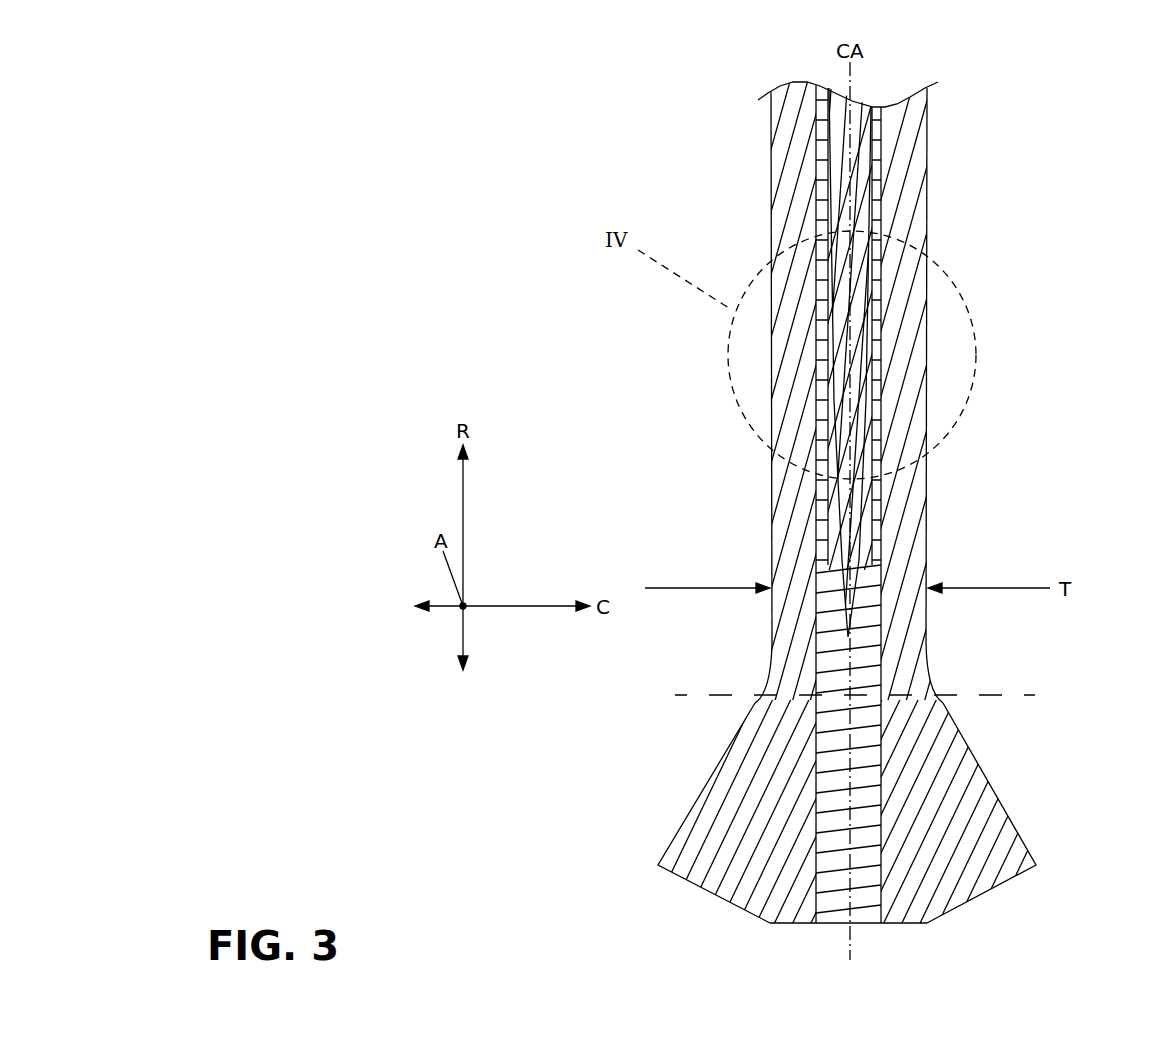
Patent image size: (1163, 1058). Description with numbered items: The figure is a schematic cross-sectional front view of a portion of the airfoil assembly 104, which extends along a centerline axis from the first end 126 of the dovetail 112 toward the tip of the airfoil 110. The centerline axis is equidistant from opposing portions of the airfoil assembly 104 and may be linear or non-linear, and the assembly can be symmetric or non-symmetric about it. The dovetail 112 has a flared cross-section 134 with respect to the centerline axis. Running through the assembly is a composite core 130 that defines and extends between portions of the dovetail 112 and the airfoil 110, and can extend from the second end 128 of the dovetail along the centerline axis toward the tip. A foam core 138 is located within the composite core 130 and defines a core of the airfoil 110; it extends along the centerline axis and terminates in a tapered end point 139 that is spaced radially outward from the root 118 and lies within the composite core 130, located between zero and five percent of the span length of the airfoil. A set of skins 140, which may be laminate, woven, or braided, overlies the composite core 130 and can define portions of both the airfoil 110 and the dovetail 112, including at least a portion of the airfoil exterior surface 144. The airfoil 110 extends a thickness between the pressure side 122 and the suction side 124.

The airfoil assembly 104 is at (633, 73).
The airfoil 110 is at (925, 535).
The dovetail 112 is at (1000, 803).
The root 118 is at (765, 697).
The pressure side 122 is at (928, 272).
The suction side 124 is at (768, 111).
The first end 126 is at (938, 680).
The second end 128 is at (934, 940).
The composite core 130 is at (886, 266).
The flared cross-section 134 is at (776, 820).
The foam core 138 is at (866, 426).
The tapered end point 139 is at (842, 623).
The set of skins 140 is at (907, 163).
The airfoil exterior surface 144 is at (772, 500).